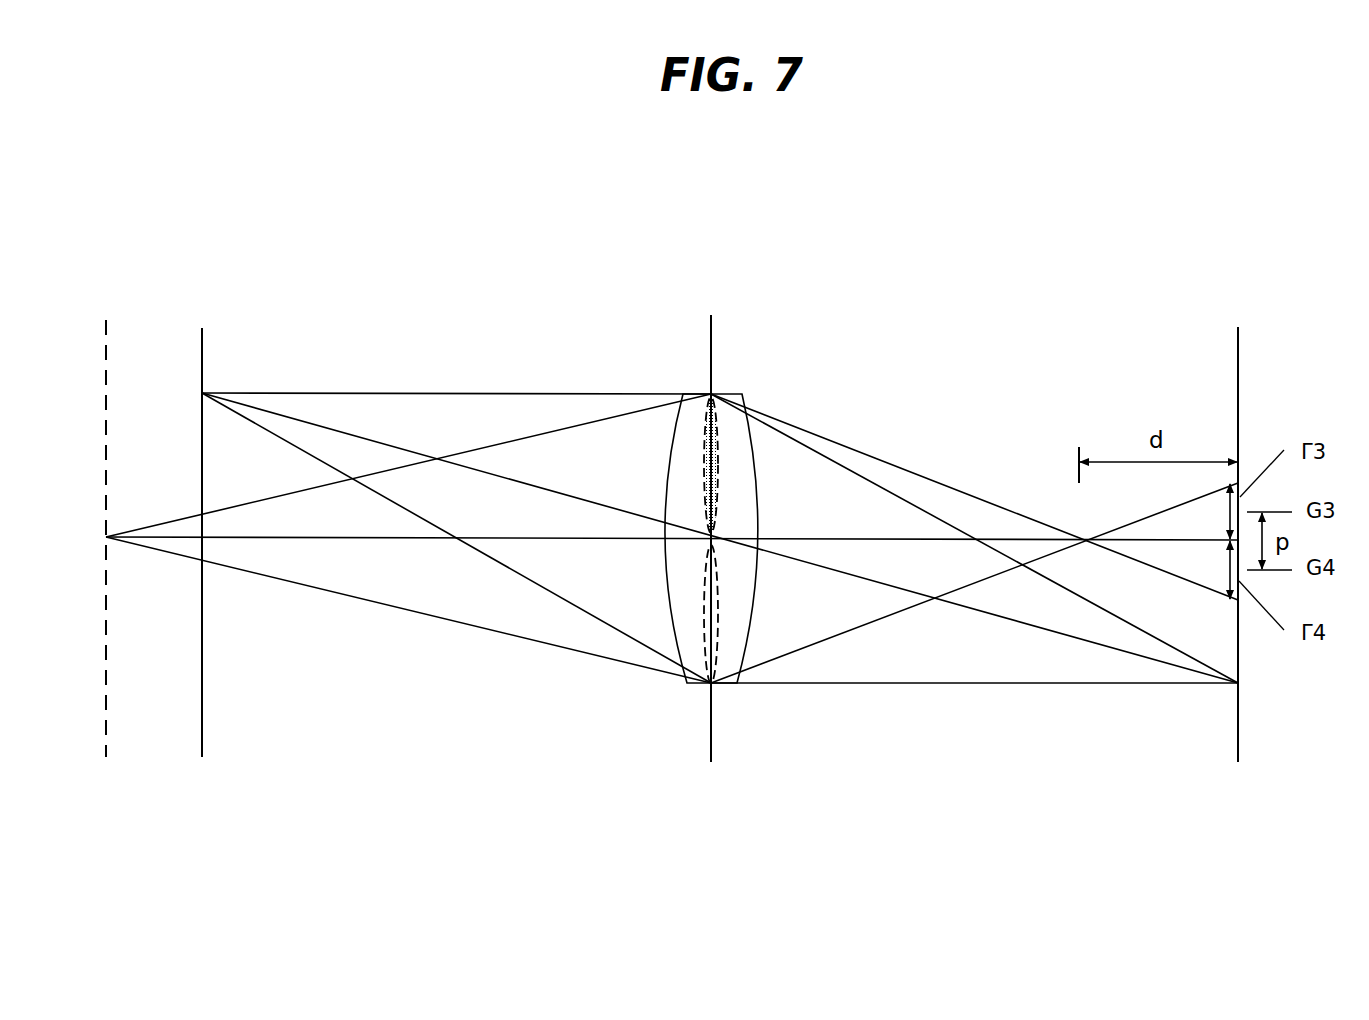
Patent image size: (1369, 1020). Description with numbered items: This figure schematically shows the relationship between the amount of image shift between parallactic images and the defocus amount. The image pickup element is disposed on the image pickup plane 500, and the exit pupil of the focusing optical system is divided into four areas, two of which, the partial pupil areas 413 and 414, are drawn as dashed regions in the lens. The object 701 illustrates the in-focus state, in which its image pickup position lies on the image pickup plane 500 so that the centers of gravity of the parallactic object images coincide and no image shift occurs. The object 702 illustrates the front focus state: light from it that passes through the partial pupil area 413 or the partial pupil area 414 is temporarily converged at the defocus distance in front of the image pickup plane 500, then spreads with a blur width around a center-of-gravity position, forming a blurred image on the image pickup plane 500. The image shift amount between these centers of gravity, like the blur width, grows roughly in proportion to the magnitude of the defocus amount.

The object 701 is at (697, 542).
The object 702 is at (649, 538).
The partial pupil area 413 is at (712, 610).
The partial pupil area 414 is at (710, 470).
The image pickup plane 500 is at (1239, 531).